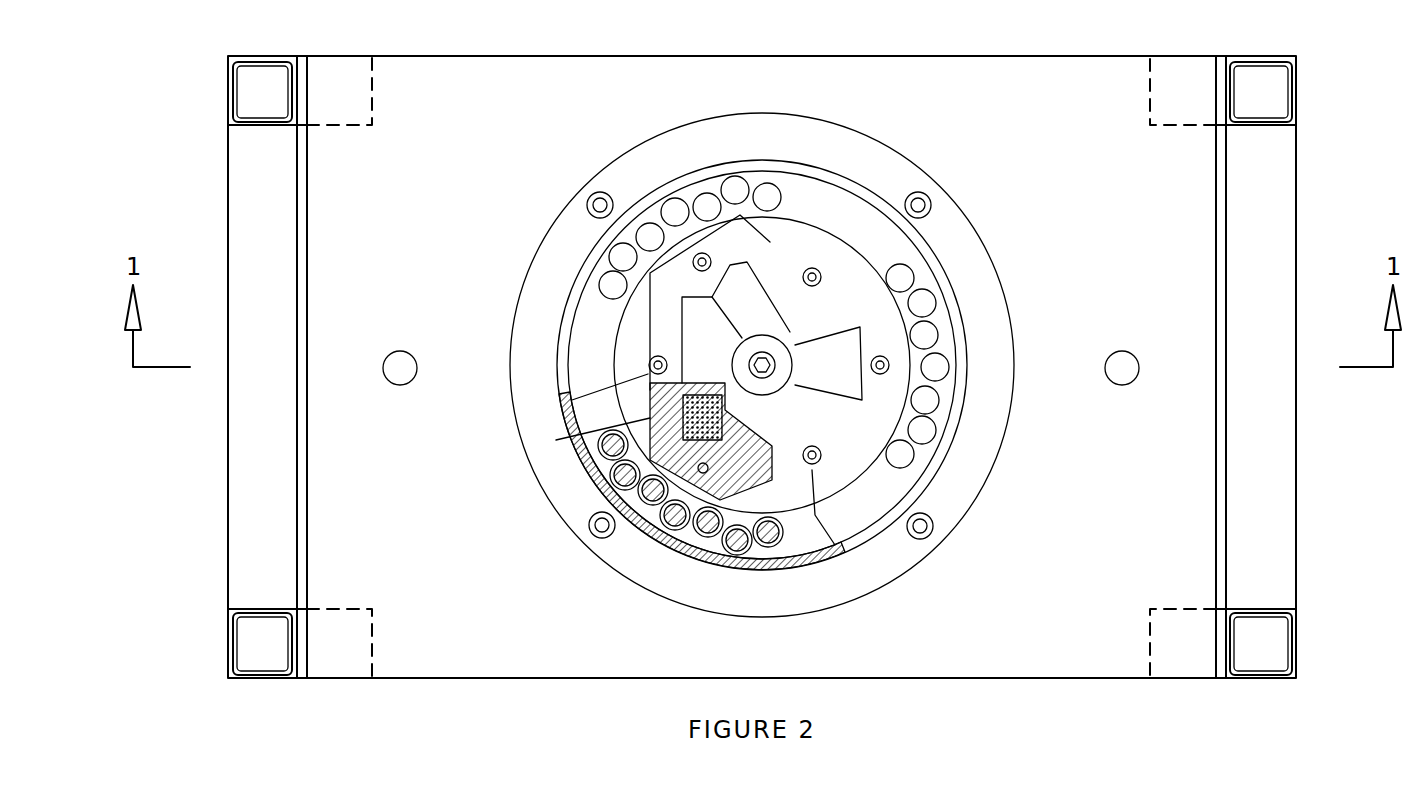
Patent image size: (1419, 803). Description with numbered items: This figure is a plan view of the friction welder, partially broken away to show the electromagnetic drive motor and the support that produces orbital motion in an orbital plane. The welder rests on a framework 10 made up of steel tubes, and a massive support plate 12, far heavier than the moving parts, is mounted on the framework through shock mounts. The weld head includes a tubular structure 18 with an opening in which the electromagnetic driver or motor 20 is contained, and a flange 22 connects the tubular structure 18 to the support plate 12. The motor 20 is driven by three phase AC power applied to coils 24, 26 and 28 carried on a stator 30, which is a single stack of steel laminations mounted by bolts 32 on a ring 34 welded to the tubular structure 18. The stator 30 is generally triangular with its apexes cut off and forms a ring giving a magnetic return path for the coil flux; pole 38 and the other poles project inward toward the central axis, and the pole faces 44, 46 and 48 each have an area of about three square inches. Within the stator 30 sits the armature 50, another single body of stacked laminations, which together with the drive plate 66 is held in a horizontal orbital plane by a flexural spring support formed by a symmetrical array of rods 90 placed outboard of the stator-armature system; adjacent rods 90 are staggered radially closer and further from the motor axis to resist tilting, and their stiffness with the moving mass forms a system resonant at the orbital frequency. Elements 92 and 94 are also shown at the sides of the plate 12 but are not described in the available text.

The framework 10 is at (1297, 178).
The support plate 12 is at (990, 70).
The tubular structure 18 is at (900, 298).
The electromagnetic driver or motor 20 is at (862, 268).
The flange 22 is at (995, 470).
The coil 24 is at (738, 228).
The coil 26 is at (580, 452).
The coil 28 is at (800, 480).
The stator 30 is at (565, 440).
The bolt 32 is at (696, 256).
The ring 34 is at (815, 405).
The stator pole 38 is at (688, 352).
The stator pole face 44 is at (855, 455).
The stator pole face 46 is at (868, 300).
The stator pole face 48 is at (700, 325).
The armature 50 is at (910, 325).
The drive plate 66 is at (895, 482).
The rod 90 is at (700, 195).
The right side rail 92 is at (1297, 478).
The left side rail 94 is at (228, 476).